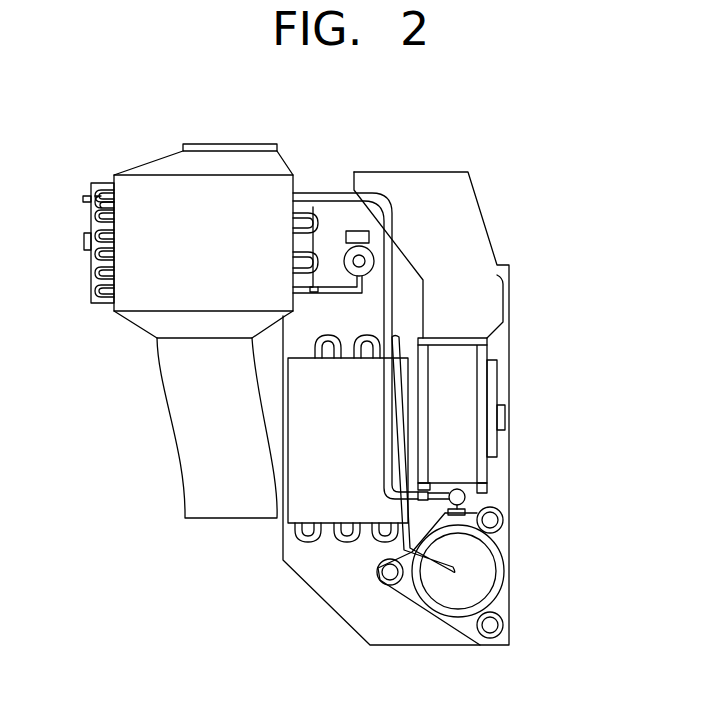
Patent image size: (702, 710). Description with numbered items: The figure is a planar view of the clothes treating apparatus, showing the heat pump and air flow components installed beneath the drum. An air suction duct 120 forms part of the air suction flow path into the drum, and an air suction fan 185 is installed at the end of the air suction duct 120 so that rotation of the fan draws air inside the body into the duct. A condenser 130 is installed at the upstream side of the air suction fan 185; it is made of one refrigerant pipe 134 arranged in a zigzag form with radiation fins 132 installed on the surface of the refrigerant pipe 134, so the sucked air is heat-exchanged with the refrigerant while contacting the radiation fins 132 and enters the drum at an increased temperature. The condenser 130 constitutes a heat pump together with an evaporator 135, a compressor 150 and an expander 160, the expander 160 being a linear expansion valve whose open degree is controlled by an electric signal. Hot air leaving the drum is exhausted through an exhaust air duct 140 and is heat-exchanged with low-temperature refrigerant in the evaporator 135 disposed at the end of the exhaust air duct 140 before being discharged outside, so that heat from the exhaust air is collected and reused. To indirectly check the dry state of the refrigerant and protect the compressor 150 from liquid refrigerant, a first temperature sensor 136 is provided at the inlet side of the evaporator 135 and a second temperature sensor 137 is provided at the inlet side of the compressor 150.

The air suction duct 120 is at (475, 225).
The condenser 130 is at (301, 502).
The radiation fins 132 is at (295, 513).
The refrigerant pipe 134 is at (295, 538).
The evaporator 135 is at (118, 226).
The first temperature sensor 136 is at (311, 220).
The second temperature sensor 137 is at (466, 497).
The exhaust air duct 140 is at (180, 430).
The compressor 150 is at (488, 572).
The expander 160 is at (354, 260).
The air suction fan 185 is at (472, 390).